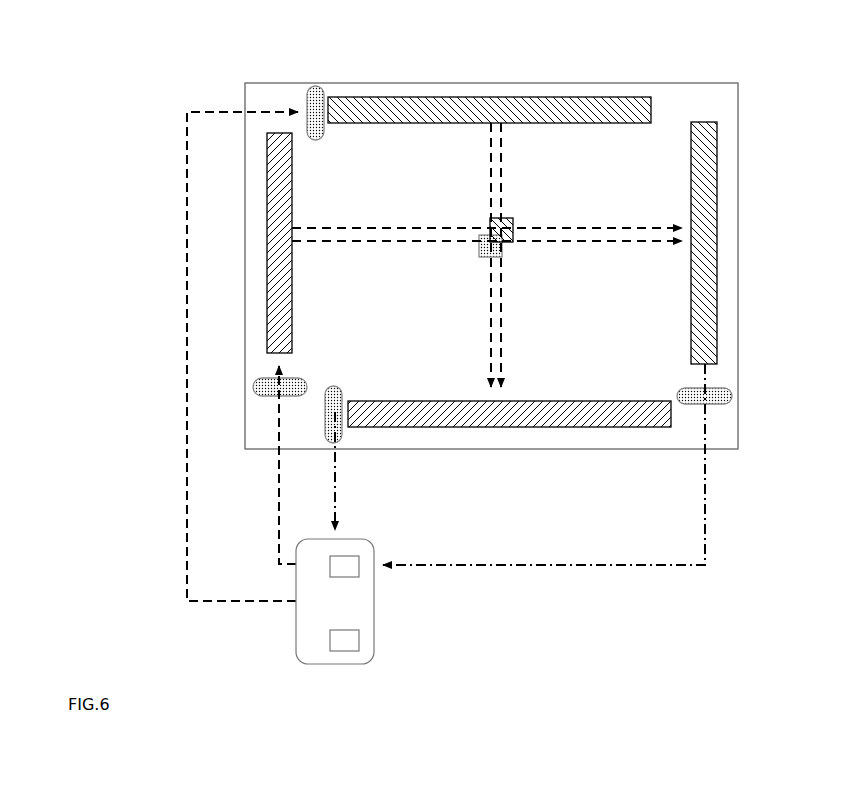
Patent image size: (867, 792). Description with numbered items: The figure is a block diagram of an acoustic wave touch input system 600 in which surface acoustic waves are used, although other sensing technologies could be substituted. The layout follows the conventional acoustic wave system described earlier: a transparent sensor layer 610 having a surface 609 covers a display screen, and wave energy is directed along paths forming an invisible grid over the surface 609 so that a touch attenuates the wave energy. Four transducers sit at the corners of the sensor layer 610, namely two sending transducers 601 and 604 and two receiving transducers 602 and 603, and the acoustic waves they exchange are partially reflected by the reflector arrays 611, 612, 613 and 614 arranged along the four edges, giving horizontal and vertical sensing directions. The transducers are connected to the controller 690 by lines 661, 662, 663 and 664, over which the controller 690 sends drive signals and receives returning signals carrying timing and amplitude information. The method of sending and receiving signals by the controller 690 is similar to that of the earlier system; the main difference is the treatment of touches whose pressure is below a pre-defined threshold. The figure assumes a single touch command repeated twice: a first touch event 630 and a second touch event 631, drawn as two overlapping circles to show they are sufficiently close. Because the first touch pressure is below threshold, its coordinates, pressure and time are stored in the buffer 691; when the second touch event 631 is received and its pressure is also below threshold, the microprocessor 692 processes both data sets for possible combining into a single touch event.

The acoustic wave touch input system 600 is at (128, 70).
The first edge sensor 601 is at (317, 85).
The second edge sensor 602 is at (730, 394).
The third edge sensor 603 is at (340, 420).
The fourth edge sensor 604 is at (254, 384).
The housing 609 is at (675, 101).
The frame 610 is at (738, 265).
The top edge reflector 611 is at (490, 97).
The right edge reflector 612 is at (715, 162).
The bottom edge reflector 613 is at (590, 427).
The left edge reflector 614 is at (268, 245).
The touch event 630 is at (483, 232).
The second touch event 631 is at (510, 222).
The first signal path 661 is at (219, 111).
The second signal path 662 is at (708, 520).
The third signal path 663 is at (338, 483).
The fourth signal path 664 is at (278, 508).
The controller 690 is at (396, 612).
The buffer 691 is at (359, 572).
The microprocessor 692 is at (359, 644).